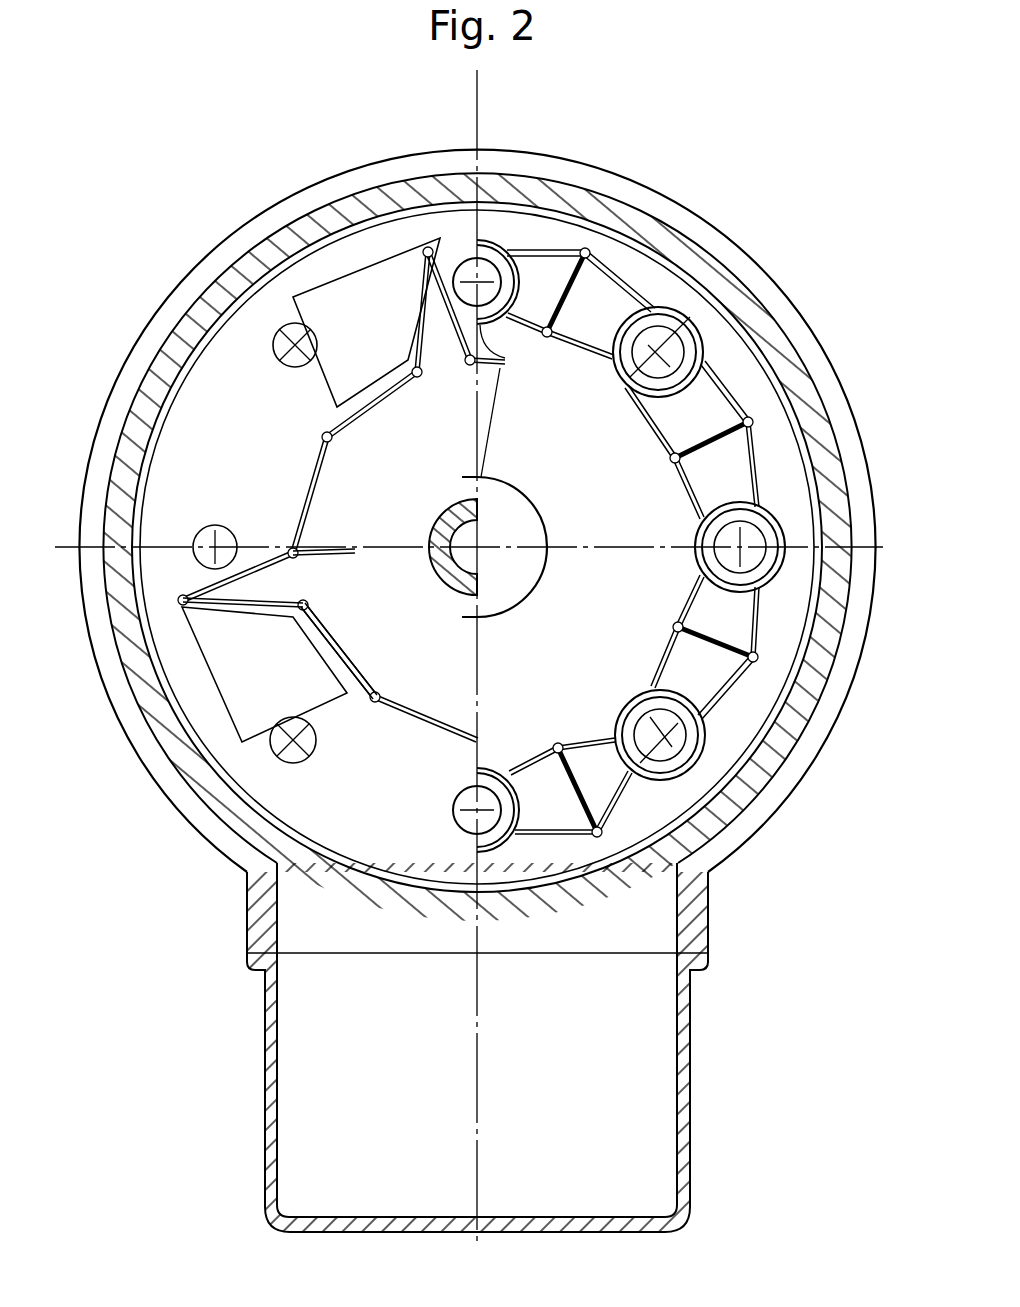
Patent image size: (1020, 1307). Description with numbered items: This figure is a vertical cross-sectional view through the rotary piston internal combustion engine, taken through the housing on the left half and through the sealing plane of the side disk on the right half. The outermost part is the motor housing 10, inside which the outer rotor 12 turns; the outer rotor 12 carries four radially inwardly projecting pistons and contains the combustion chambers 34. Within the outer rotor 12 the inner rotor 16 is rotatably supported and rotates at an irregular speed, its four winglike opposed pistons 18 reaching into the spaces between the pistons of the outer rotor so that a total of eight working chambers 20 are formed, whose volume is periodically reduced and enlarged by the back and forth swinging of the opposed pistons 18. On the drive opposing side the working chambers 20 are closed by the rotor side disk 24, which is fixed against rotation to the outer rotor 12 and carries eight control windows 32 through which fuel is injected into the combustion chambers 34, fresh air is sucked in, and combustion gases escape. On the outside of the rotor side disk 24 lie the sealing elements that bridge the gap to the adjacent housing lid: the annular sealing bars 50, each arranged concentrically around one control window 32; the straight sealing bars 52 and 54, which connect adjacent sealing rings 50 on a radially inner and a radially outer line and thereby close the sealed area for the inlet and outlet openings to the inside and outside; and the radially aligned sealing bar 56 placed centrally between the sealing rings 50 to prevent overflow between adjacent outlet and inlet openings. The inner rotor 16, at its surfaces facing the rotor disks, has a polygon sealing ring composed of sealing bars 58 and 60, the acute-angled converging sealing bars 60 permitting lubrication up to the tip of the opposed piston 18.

The motor housing 10 is at (448, 192).
The outer rotor 12 is at (267, 293).
The inner rotor 16 is at (400, 440).
The opposed pistons 18 is at (437, 303).
The working chambers 20 is at (457, 265).
The rotor side disk 24 is at (645, 272).
The control windows 32 is at (772, 510).
The combustion chambers 34 is at (273, 342).
The annular sealing bars 50 is at (633, 692).
The straight sealing bars 52 is at (702, 632).
The straight sealing bars 54 is at (757, 652).
The sealing bar 56 is at (693, 673).
The sealing bars 58 is at (430, 707).
The sealing bars 60 is at (277, 590).